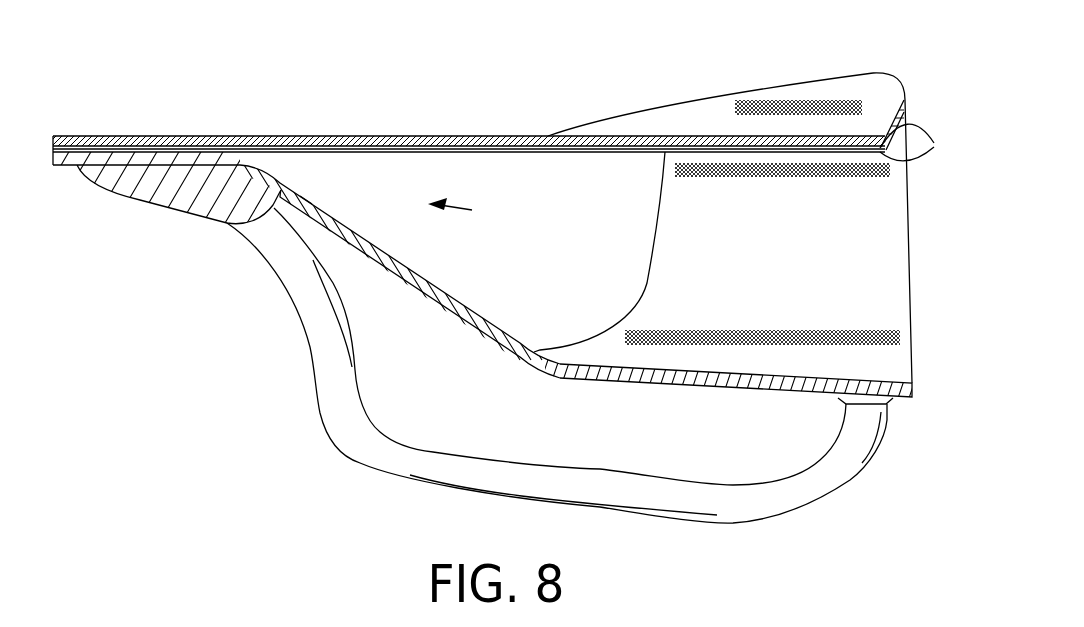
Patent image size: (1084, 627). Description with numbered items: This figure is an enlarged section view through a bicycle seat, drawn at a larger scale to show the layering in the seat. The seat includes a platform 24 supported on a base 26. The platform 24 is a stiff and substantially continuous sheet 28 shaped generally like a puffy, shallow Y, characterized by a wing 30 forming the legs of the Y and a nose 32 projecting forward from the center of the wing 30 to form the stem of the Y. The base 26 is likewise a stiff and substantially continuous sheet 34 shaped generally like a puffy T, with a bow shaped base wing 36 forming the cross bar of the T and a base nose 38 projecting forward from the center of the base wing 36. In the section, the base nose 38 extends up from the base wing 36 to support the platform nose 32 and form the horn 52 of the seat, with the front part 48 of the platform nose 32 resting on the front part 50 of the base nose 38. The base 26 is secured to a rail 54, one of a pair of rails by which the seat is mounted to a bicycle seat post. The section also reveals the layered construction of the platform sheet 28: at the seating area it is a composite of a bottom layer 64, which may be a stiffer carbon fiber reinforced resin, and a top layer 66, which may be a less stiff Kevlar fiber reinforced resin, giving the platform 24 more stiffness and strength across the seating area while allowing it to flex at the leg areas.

The platform 24 is at (597, 128).
The base 26 is at (574, 357).
The platform sheet 28 is at (920, 130).
The wing 30 is at (831, 83).
The nose 32 is at (243, 136).
The base sheet 34 is at (453, 311).
The base wing 36 is at (668, 262).
The base nose 38 is at (308, 202).
The front part of platform nose 48 is at (60, 136).
The front part of base nose 50 is at (77, 166).
The horn 52 is at (464, 208).
The rail 54 is at (337, 398).
The bottom layer 64 is at (584, 152).
The top layer 66 is at (494, 136).